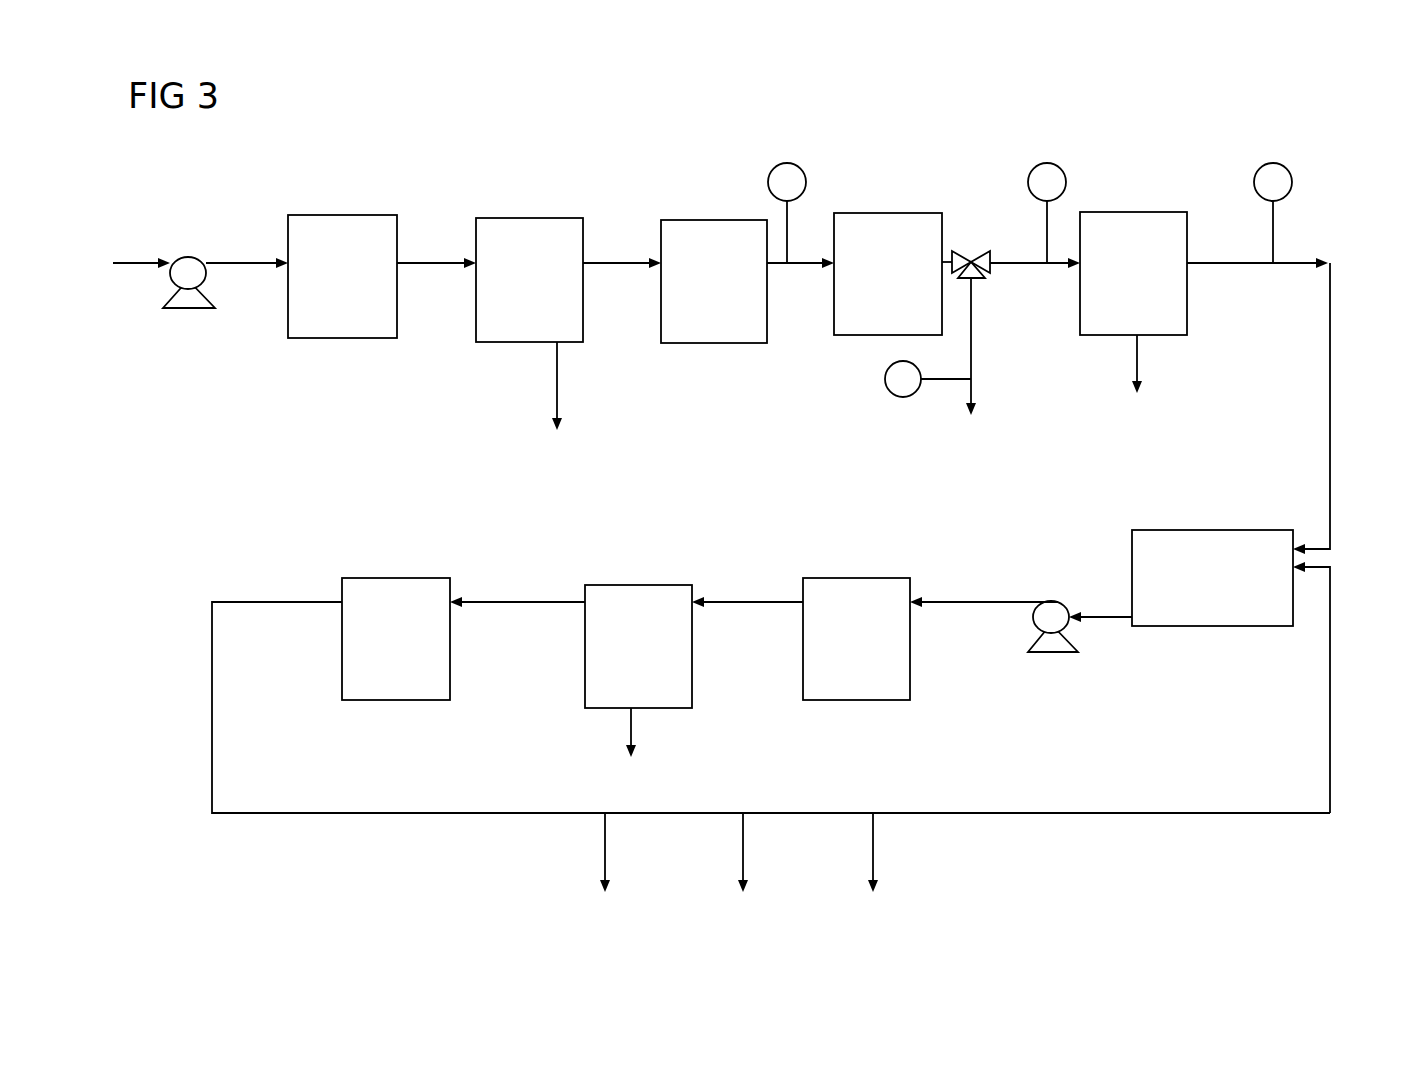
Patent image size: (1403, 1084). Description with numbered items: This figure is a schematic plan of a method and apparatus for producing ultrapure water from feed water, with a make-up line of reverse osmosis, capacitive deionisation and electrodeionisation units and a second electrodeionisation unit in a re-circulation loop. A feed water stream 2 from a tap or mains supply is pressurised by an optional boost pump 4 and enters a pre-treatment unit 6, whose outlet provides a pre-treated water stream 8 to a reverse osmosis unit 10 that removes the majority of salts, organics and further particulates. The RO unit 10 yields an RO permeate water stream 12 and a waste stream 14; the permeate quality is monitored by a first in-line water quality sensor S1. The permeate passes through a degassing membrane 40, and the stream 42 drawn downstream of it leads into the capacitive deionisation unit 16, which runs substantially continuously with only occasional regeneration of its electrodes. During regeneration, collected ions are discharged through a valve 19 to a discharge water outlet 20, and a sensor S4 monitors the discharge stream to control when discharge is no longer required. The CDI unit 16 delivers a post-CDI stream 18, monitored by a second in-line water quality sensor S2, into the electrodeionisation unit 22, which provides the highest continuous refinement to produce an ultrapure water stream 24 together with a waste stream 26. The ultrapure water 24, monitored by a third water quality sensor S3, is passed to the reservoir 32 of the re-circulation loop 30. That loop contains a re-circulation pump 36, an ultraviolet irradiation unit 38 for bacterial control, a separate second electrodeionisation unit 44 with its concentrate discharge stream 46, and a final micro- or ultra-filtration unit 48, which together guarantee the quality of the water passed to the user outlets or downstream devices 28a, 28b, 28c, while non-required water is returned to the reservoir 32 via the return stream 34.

The feed water stream 2 is at (145, 275).
The boost pump 4 is at (188, 257).
The pre-treatment unit 6 is at (345, 215).
The pre-treated water stream 8 is at (433, 273).
The reverse osmosis unit 10 is at (525, 218).
The RO permeate water stream 12 is at (618, 263).
The waste stream 14 is at (555, 404).
The capacitive deionisation unit 16 is at (887, 213).
The post-CDI stream 18 is at (1018, 263).
The valve 19 is at (971, 262).
The discharge water outlet 20 is at (967, 365).
The electrodeionisation unit 22 is at (1108, 212).
The ultrapure water stream 24 is at (1255, 263).
The waste stream 26 is at (1133, 381).
The user outlet 28a is at (599, 869).
The user outlet 28b is at (745, 869).
The user outlet 28c is at (875, 869).
The re-circulation loop 30 is at (210, 667).
The reservoir 32 is at (1205, 626).
The return stream 34 is at (1330, 650).
The re-circulation pump 36 is at (1030, 635).
The UV purification unit 38 is at (855, 578).
The degassing membrane 40 is at (678, 220).
The line from degasser to capacitive deionization unit 42 is at (775, 263).
The second electrodeionisation unit 44 is at (617, 585).
The concentrate discharge stream 46 is at (627, 752).
The final micro- or ultra-filtration unit 48 is at (378, 578).
The first in-line water quality sensor S1 is at (785, 199).
The second in-line water quality sensor S2 is at (1046, 197).
The third water quality sensor S3 is at (1273, 195).
The sensor S4 is at (926, 394).